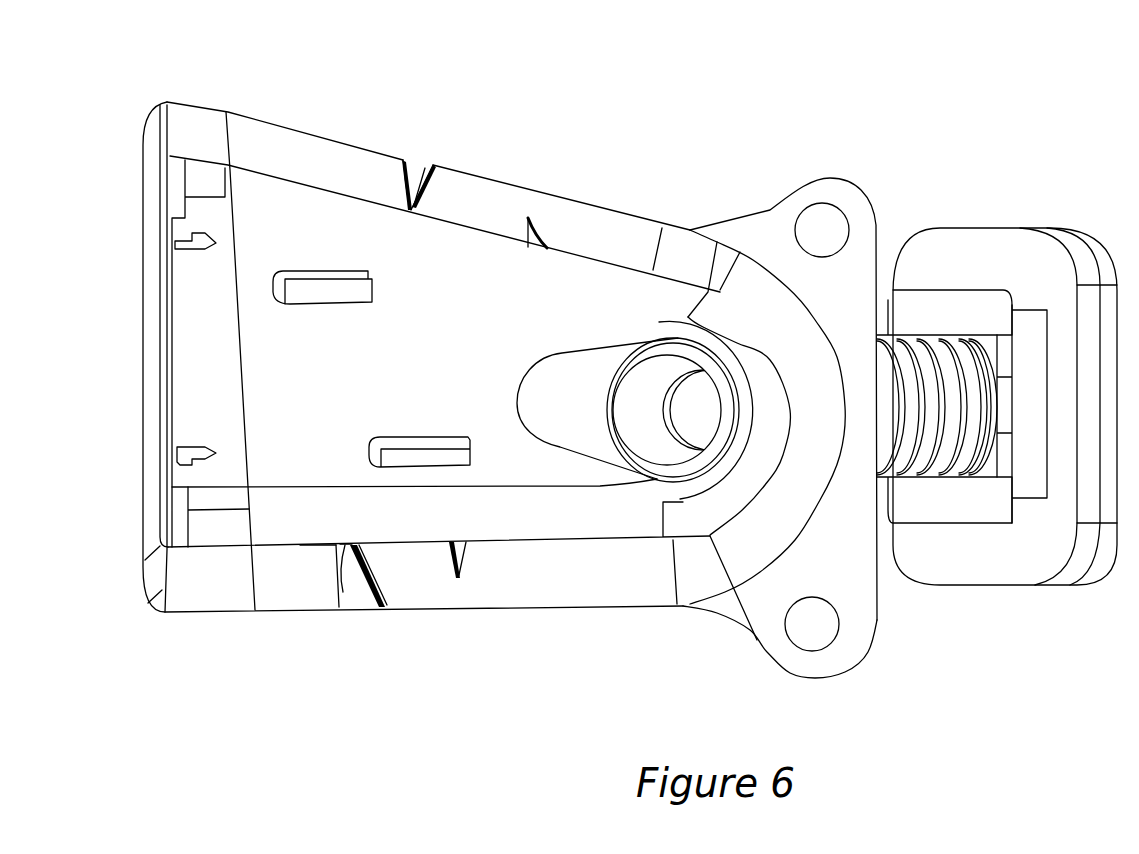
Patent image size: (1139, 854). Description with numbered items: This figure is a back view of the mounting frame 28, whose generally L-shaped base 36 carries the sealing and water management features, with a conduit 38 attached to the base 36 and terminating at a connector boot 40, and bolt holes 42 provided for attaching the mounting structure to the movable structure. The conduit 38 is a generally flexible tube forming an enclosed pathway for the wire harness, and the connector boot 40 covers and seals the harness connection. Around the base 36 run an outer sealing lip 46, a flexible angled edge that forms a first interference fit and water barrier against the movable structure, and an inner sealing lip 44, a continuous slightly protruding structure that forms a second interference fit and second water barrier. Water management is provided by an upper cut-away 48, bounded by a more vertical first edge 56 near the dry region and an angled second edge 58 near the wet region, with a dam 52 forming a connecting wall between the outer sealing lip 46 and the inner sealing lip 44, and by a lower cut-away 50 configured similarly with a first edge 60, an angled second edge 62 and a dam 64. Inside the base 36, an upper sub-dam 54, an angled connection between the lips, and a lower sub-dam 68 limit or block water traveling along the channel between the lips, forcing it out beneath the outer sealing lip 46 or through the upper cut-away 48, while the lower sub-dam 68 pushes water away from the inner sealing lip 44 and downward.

The mounting frame 28 is at (627, 86).
The base 36 is at (306, 393).
The conduit 38 is at (927, 453).
The connector boot 40 is at (1018, 228).
The bolt holes 42 is at (806, 216).
The inner sealing lip 44 is at (573, 506).
The outer sealing lip 46 is at (278, 145).
The upper cut-away 48 is at (415, 172).
The lower cut-away 50 is at (358, 610).
The dam 52 is at (407, 212).
The upper sub-dam 54 is at (540, 230).
The first edge 56 is at (420, 191).
The second edge 58 is at (416, 188).
The first edge 60 is at (343, 590).
The second edge 62 is at (370, 603).
The dam 64 is at (340, 571).
The lower sub-dam 68 is at (463, 573).